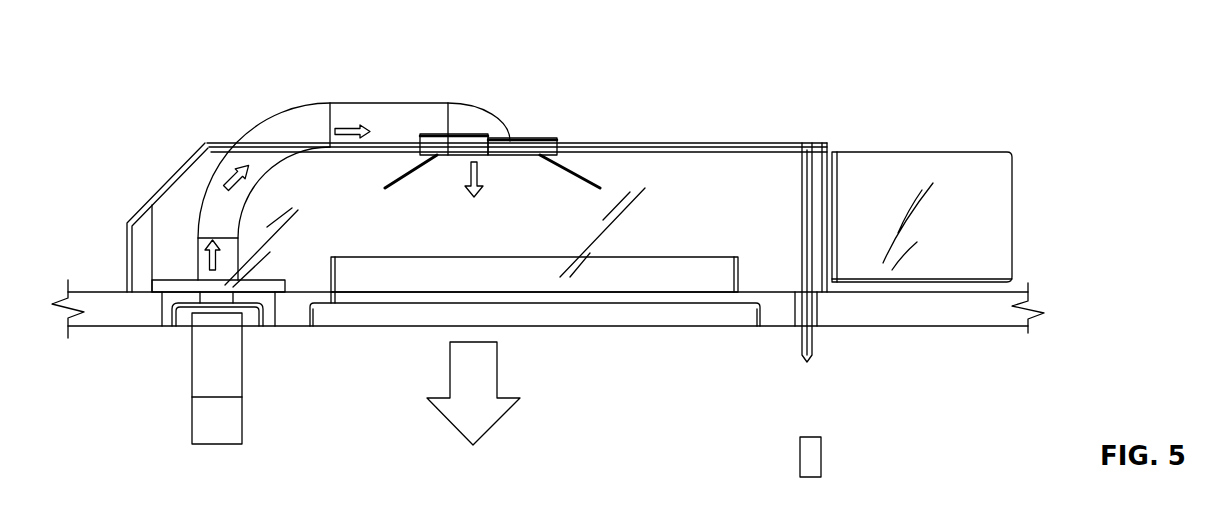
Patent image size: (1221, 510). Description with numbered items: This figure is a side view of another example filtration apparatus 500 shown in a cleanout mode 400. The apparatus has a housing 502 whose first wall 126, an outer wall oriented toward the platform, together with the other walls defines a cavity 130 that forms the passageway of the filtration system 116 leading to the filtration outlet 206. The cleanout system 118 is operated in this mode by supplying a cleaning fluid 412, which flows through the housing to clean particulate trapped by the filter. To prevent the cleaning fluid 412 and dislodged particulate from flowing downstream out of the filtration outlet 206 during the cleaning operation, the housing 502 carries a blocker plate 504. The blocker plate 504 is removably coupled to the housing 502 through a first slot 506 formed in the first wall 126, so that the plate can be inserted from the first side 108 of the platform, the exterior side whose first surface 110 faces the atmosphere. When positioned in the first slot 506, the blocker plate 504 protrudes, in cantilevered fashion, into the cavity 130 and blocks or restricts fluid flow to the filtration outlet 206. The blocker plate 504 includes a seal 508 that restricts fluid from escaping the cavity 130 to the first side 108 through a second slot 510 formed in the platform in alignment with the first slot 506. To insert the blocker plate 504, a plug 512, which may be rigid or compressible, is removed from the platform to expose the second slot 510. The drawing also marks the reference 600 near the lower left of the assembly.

The filtration apparatus 500 is at (128, 73).
The cleanout system 118 is at (333, 85).
The cleanout mode 400 is at (583, 103).
The housing 502 is at (712, 142).
The filtration outlet 206 is at (880, 152).
The cleaning fluid 412 is at (243, 181).
The cavity 130 is at (720, 202).
The first wall 126 is at (763, 290).
The first slot 506 is at (800, 290).
The seal 508 is at (797, 308).
The blocker plate 504 is at (808, 363).
The second slot 510 is at (815, 308).
The first surface 110 is at (948, 327).
The filtration system 116 is at (638, 348).
The first side 108 is at (358, 397).
The plug 512 is at (821, 455).
The airflow path 600 is at (105, 494).